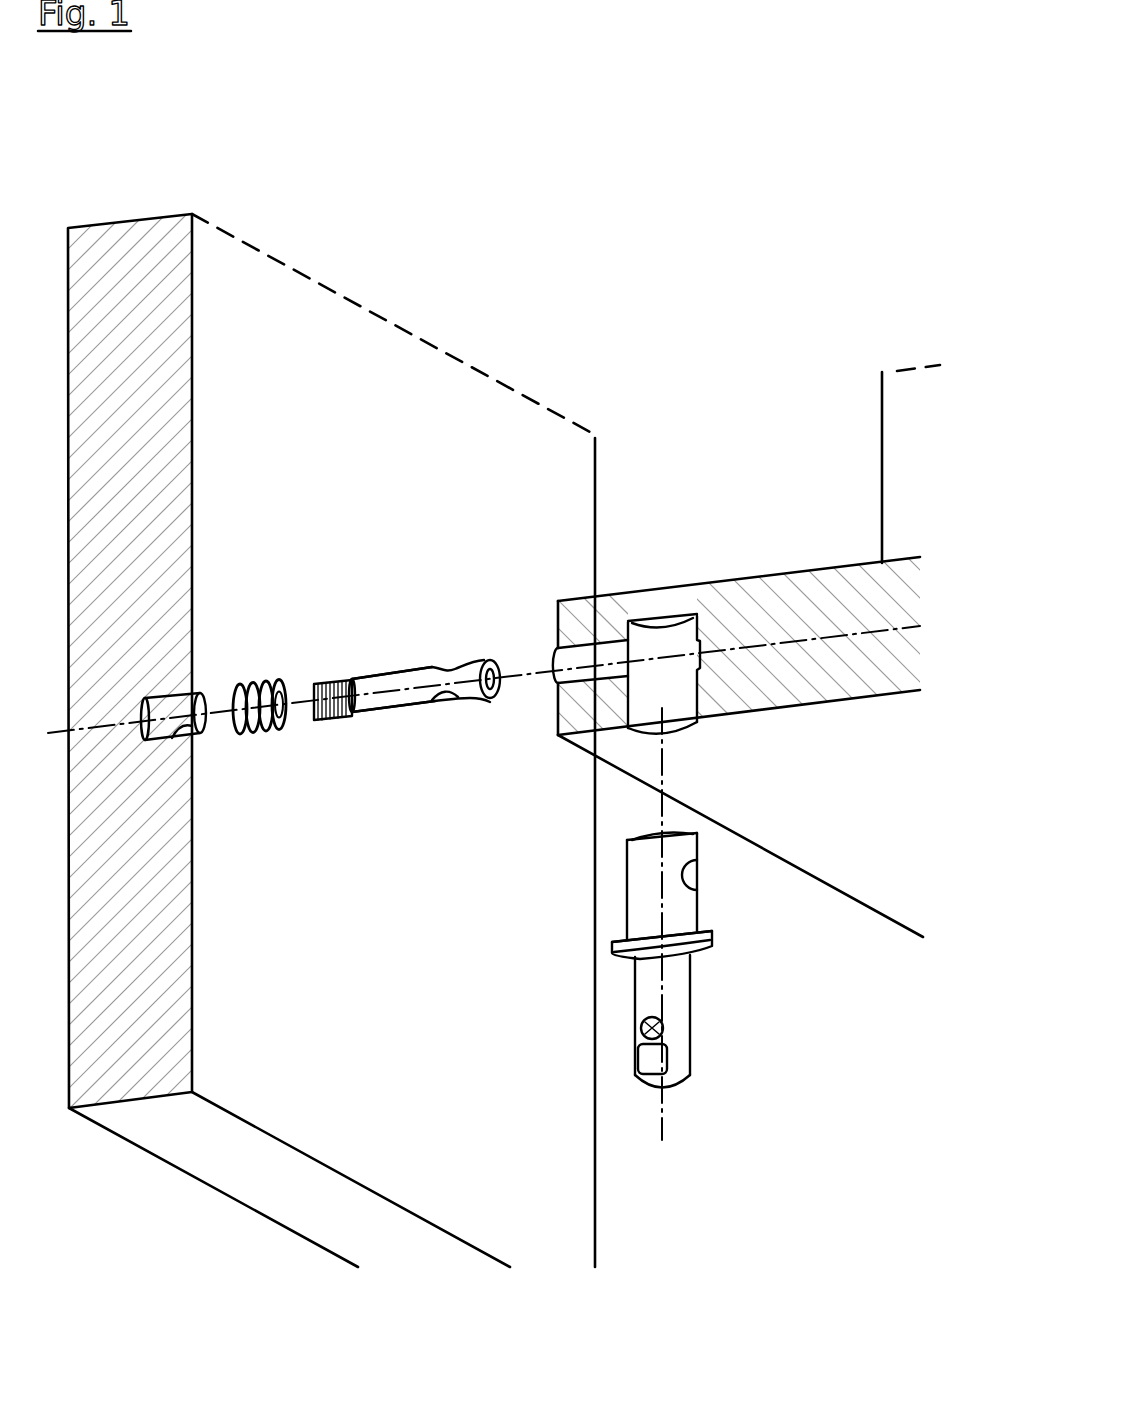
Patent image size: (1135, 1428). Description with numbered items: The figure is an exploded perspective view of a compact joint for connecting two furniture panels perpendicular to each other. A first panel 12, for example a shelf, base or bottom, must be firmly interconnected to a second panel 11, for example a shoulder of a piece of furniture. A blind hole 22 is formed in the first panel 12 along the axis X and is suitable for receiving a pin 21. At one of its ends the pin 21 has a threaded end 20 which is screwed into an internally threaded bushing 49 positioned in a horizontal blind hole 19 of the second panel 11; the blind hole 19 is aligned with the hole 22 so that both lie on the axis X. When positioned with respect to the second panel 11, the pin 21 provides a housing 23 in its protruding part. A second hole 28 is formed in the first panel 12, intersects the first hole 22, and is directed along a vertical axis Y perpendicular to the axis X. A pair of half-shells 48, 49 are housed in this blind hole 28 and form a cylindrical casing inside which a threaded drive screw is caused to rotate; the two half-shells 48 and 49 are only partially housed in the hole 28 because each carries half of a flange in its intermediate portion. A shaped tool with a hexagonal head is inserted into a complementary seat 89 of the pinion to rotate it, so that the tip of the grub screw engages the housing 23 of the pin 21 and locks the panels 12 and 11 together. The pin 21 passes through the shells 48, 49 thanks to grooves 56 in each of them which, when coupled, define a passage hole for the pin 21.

The second panel 11 is at (159, 235).
The first panel 12 is at (860, 588).
The blind hole 19 is at (197, 731).
The threaded end 20 is at (330, 680).
The pin 21 is at (385, 673).
The blind hole 22 is at (570, 672).
The housing 23 is at (453, 697).
The second hole 28 is at (668, 626).
The half-shell 48 is at (635, 912).
The internally threaded bushing / half-shell 49 is at (251, 686).
The groove 56 is at (690, 872).
The complementary seat 89 is at (637, 1030).
The axis X is at (525, 673).
The axis Y is at (657, 782).